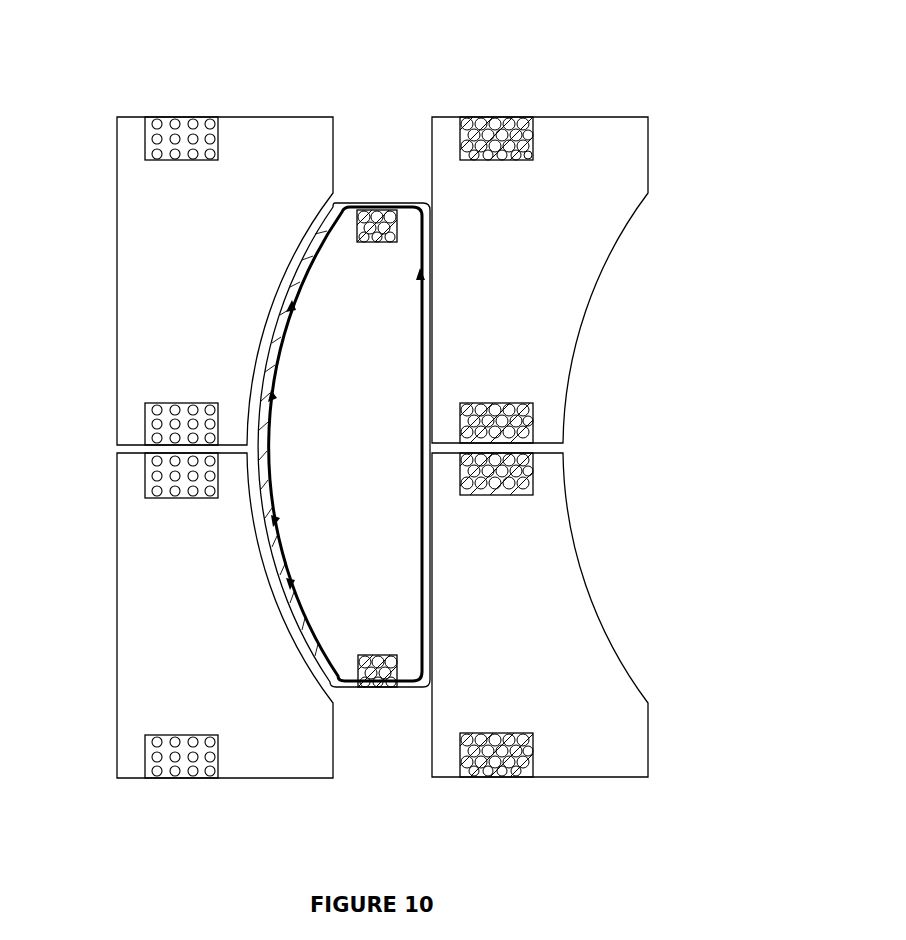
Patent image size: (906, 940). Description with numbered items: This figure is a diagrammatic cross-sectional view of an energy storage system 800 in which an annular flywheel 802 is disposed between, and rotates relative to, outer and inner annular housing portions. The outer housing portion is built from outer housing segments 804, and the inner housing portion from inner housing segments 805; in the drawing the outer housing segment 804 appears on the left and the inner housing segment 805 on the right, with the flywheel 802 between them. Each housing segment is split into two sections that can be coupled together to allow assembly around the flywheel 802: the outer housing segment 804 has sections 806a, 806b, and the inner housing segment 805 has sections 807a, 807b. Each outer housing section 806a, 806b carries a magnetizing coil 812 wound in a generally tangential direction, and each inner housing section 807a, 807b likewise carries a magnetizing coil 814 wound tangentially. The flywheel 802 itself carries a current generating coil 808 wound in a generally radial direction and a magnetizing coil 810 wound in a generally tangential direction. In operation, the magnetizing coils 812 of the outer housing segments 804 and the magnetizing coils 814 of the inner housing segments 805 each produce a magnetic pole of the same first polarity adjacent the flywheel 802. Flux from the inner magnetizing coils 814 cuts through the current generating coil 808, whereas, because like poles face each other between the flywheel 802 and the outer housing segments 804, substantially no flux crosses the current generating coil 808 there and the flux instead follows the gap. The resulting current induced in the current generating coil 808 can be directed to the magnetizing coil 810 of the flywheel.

The energy storage system 800 is at (592, 80).
The flywheel 802 is at (340, 663).
The outer housing segment 804 is at (113, 181).
The inner housing segment 805 is at (597, 294).
The outer housing section 806a is at (276, 128).
The outer housing section 806b is at (277, 760).
The inner housing section 807a is at (633, 137).
The inner housing section 807b is at (585, 755).
The current generating coil 808 is at (357, 203).
The magnetizing coil 810 is at (372, 210).
The magnetizing coil 812 is at (162, 120).
The magnetizing coil 814 is at (470, 122).